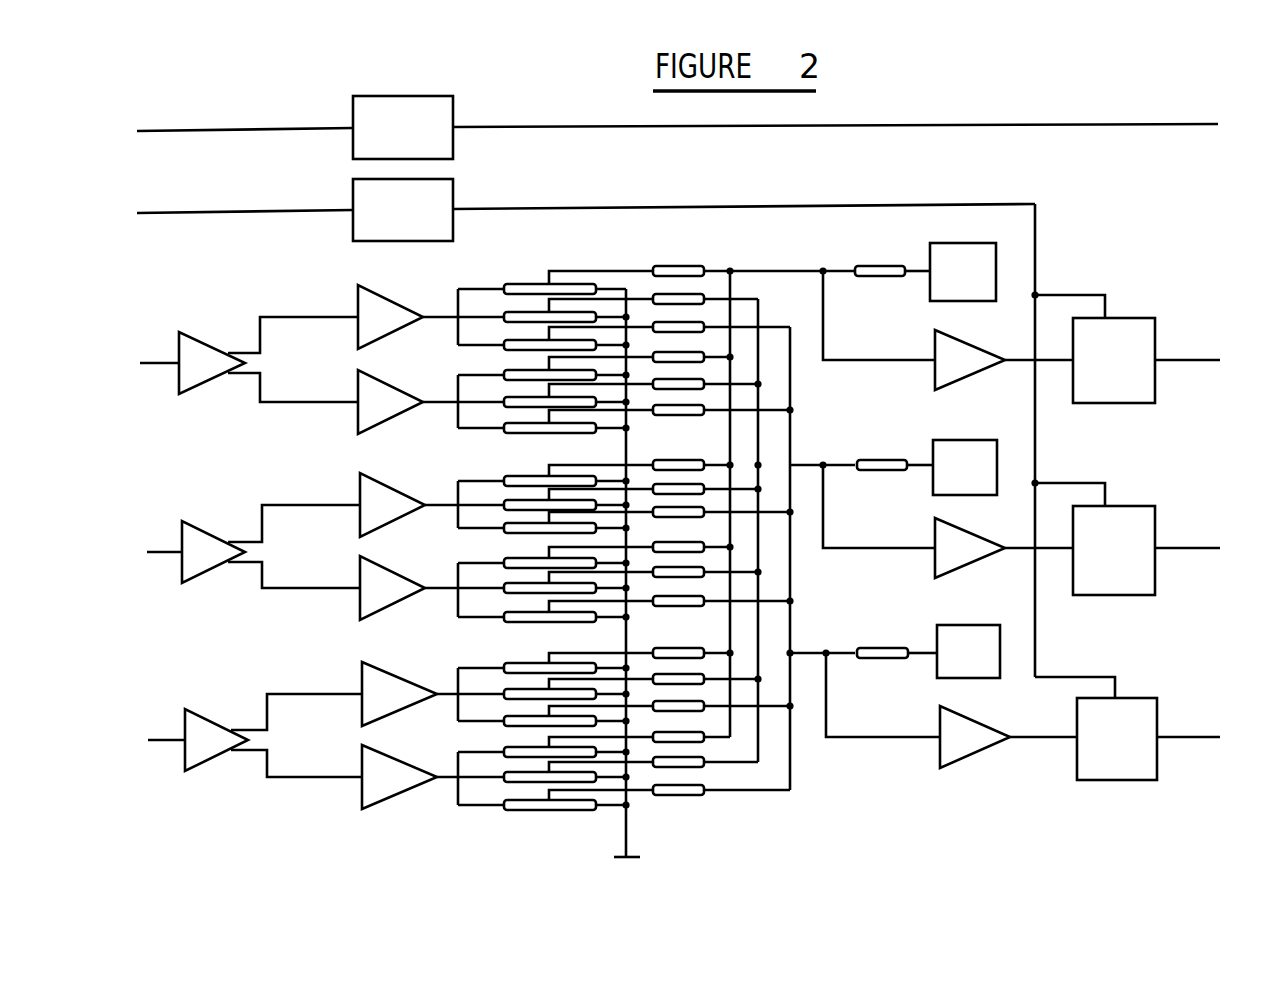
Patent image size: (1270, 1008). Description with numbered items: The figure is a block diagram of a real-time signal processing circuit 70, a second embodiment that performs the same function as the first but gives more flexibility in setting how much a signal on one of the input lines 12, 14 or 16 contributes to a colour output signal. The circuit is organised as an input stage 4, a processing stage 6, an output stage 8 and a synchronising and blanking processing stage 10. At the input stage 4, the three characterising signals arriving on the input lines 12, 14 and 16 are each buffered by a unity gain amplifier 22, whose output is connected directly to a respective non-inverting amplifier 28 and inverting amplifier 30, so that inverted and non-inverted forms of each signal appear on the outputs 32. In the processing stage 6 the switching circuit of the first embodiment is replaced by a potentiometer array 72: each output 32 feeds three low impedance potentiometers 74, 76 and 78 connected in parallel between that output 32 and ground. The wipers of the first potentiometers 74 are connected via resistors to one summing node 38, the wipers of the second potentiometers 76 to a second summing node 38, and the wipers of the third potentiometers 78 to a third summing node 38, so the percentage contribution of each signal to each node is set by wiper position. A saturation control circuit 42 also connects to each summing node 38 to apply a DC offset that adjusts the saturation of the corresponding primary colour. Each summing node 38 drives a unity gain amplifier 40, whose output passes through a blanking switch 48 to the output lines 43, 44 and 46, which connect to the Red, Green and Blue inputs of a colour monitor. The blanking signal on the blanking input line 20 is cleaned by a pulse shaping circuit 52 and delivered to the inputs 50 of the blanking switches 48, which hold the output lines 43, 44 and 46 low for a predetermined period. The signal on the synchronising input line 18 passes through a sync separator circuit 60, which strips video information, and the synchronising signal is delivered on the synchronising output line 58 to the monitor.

The input stage 4 is at (263, 792).
The processing stage 6 is at (423, 868).
The output stage 8 is at (1097, 790).
The synchronising and blanking processing stage 10 is at (462, 97).
The input line 12 is at (160, 368).
The input line 14 is at (160, 556).
The input line 16 is at (165, 745).
The synchronising input line 18 is at (176, 132).
The blanking input line 20 is at (176, 214).
The unity gain amplifier 22 is at (195, 368).
The non-inverting amplifier 28 is at (368, 305).
The inverting amplifier 30 is at (385, 405).
The output 32 is at (440, 316).
The summing node 38 is at (822, 262).
The unity gain amplifier 40 is at (960, 360).
The saturation control circuit 42 is at (960, 243).
The output line 43 is at (1188, 366).
The output line 44 is at (1197, 553).
The output line 46 is at (1197, 742).
The blanking switch 48 is at (1130, 330).
The input 50 is at (1082, 290).
The pulse shaping circuit 52 is at (440, 195).
The synchronising output line 58 is at (1112, 126).
The sync separator circuit 60 is at (355, 120).
The real-time signal processing circuit 70 is at (1133, 110).
The potentiometer array 72 is at (540, 815).
The first potentiometer 74 is at (512, 284).
The second potentiometer 76 is at (517, 313).
The third potentiometer 78 is at (517, 342).